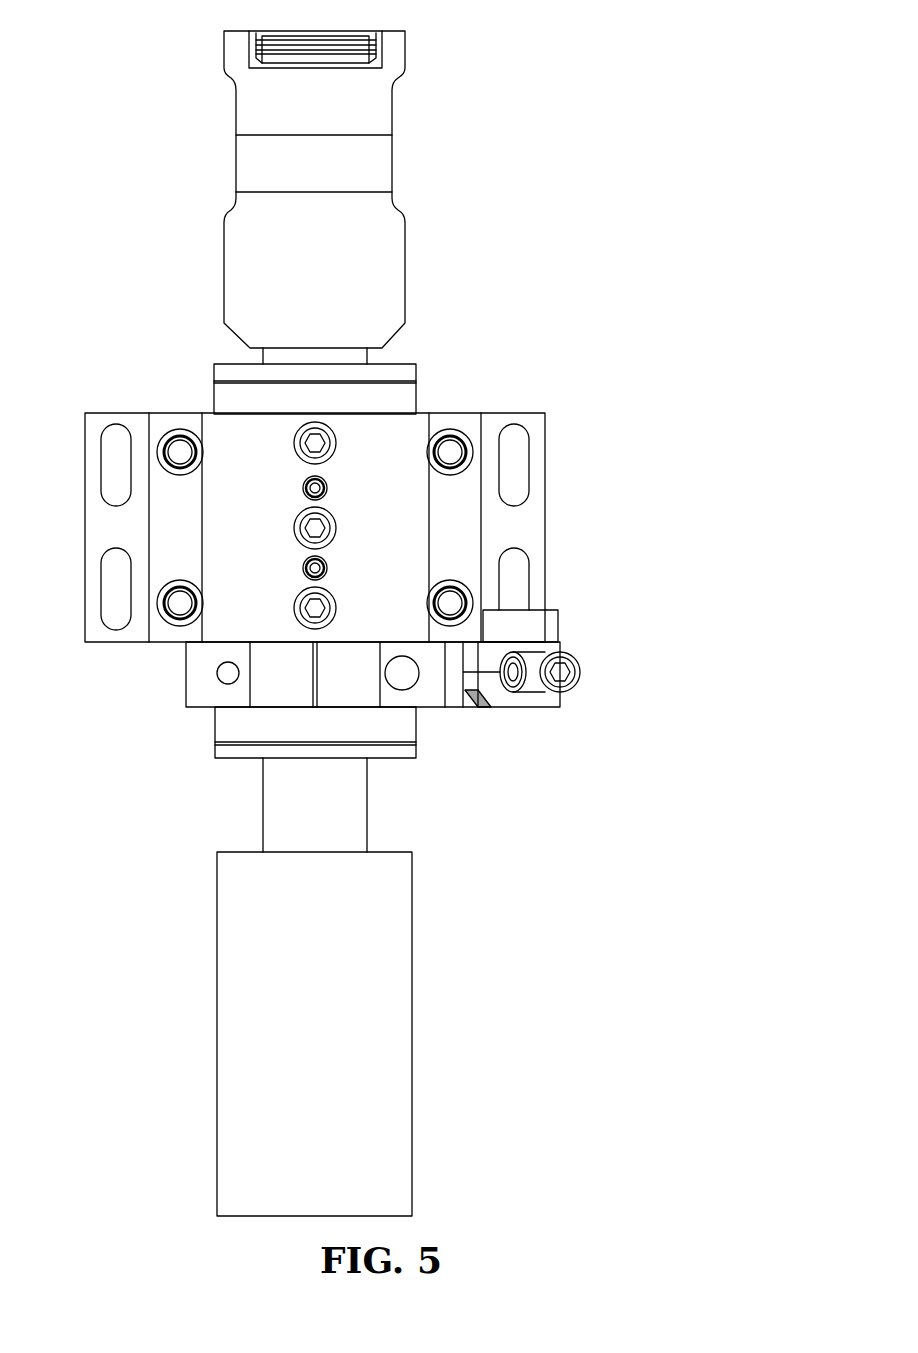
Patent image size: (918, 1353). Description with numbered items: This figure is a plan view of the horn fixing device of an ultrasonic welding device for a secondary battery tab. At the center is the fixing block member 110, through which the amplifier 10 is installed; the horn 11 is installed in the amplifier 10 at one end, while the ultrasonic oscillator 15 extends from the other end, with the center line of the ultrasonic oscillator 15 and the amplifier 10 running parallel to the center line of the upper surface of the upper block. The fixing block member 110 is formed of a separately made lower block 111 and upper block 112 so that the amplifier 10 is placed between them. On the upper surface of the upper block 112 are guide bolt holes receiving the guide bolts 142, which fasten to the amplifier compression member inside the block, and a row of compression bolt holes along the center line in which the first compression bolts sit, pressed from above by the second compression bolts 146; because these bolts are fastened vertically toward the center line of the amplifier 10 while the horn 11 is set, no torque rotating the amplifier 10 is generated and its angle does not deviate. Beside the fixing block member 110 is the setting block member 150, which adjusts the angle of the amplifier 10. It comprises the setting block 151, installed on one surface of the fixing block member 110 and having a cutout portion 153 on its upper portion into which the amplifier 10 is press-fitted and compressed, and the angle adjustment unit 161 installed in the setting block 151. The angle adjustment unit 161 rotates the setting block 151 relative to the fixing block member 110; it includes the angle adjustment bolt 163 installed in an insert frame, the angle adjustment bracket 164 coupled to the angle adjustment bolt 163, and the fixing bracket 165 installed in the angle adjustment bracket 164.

The amplifier 10 is at (395, 398).
The horn 11 is at (376, 162).
The ultrasonic oscillator 15 is at (237, 1075).
The fixing block member 110 is at (555, 413).
The lower block 111 is at (530, 521).
The upper block 112 is at (468, 494).
The guide bolts 142 is at (302, 487).
The second compression bolts 146 is at (300, 440).
The setting block member 150 is at (447, 722).
The setting block 151 is at (202, 685).
The cutout portion 153 is at (313, 676).
The angle adjustment unit 161 is at (585, 656).
The angle adjustment bolt 163 is at (580, 675).
The angle adjustment bracket 164 is at (525, 698).
The fixing bracket 165 is at (550, 625).